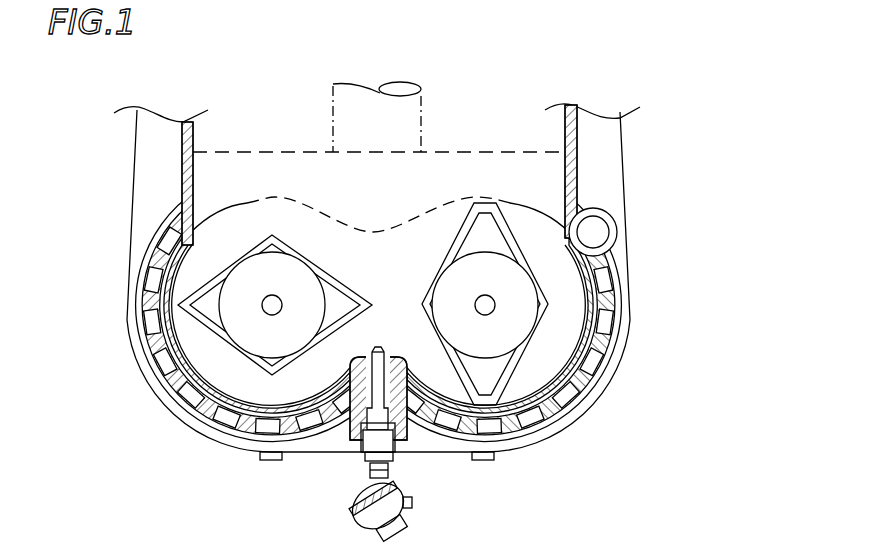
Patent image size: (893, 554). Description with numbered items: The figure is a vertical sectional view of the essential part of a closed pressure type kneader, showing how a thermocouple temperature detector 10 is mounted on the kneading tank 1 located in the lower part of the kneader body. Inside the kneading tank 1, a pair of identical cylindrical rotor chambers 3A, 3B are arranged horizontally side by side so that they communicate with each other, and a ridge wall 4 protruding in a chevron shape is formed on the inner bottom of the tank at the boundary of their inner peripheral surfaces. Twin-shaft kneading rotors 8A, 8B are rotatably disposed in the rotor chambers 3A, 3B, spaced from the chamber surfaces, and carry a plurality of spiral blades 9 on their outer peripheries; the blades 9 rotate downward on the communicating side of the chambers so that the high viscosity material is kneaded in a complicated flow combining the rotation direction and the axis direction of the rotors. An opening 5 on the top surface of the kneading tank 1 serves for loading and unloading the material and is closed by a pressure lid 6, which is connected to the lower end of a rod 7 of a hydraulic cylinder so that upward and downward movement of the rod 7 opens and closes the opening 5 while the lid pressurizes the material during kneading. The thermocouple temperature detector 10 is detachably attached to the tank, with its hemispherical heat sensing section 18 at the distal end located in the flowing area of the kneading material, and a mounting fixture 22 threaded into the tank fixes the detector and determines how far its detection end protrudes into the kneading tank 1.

The kneading tank 1 is at (676, 160).
The rotor chamber 3A is at (293, 236).
The rotor chamber 3B is at (411, 252).
The ridge wall 4 is at (392, 356).
The opening 5 is at (196, 178).
The pressure lid 6 is at (300, 150).
The rod 7 is at (421, 118).
The kneading rotor 8A is at (339, 256).
The kneading rotor 8B is at (553, 309).
The spiral blades 9 is at (518, 215).
The thermocouple temperature detector 10 is at (430, 505).
The heat sensing section 18 is at (380, 344).
The mounting fixture 22 is at (358, 443).